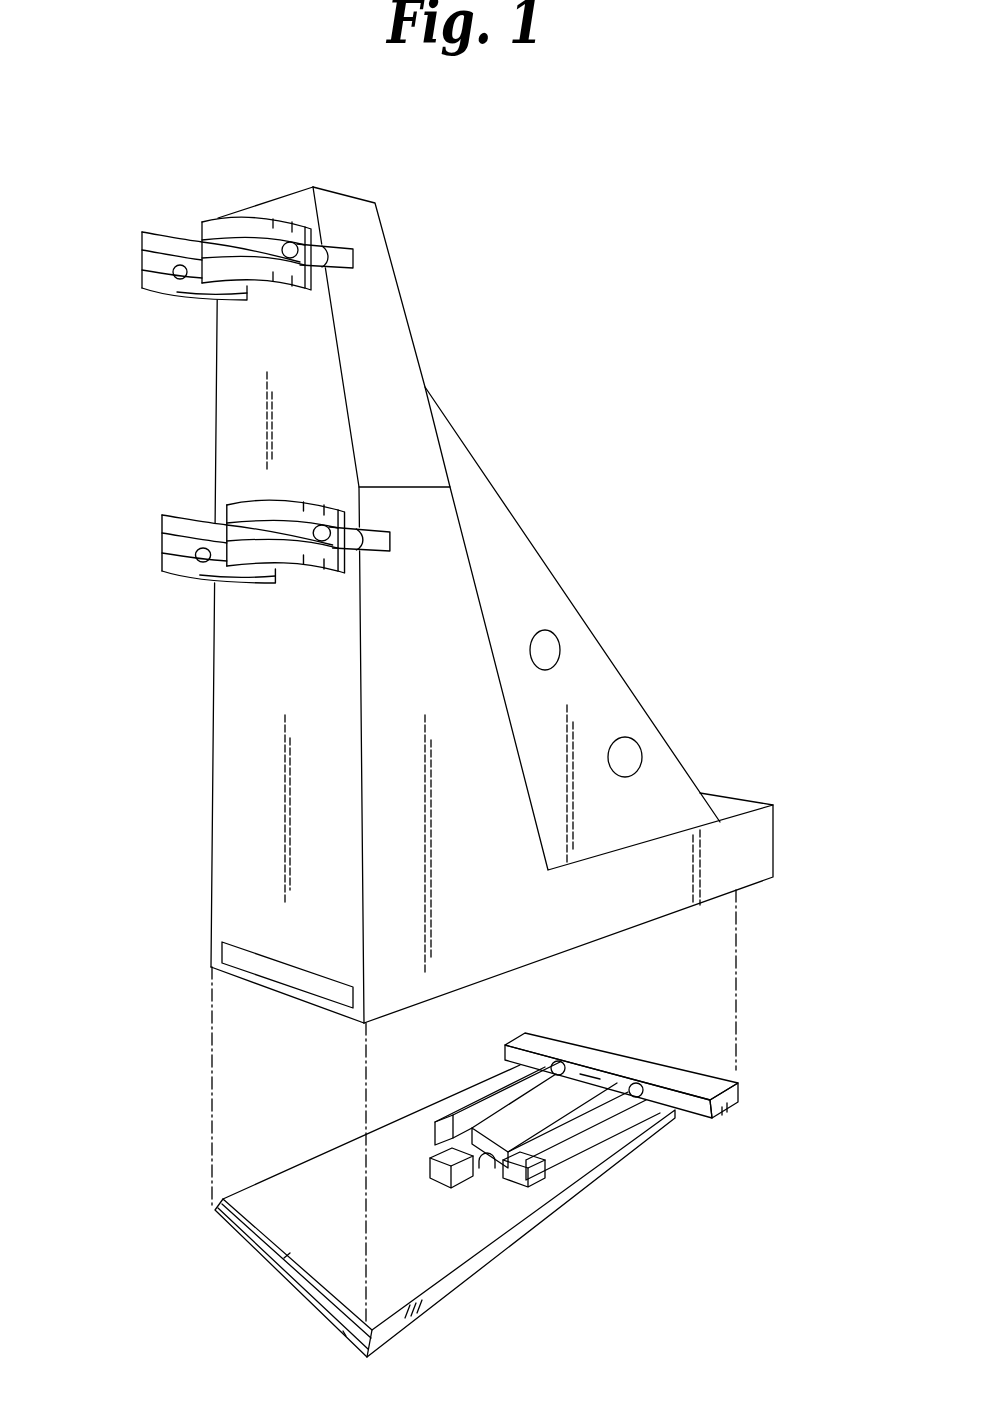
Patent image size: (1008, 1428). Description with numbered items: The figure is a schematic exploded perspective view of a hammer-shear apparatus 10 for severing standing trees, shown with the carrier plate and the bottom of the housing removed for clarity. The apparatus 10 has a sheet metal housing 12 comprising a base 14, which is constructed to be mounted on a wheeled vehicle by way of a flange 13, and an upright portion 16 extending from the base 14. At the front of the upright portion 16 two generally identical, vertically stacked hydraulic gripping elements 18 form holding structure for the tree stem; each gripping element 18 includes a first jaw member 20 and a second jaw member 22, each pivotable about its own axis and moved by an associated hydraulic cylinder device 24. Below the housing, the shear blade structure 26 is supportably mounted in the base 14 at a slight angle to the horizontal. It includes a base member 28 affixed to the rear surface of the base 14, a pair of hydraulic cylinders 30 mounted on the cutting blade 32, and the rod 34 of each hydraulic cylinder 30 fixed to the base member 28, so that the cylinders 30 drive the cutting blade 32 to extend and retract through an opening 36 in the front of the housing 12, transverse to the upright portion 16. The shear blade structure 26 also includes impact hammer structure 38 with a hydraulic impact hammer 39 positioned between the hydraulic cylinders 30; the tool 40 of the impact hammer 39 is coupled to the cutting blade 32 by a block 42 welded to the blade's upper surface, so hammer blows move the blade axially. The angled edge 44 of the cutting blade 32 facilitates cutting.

The hammer-shear apparatus 10 is at (580, 341).
The housing 12 is at (420, 342).
The flange 13 is at (560, 592).
The base 14 is at (770, 848).
The upright portion 16 is at (228, 787).
The hydraulic gripping element 18 is at (143, 279).
The first jaw member 20 is at (166, 246).
The second jaw member 22 is at (232, 229).
The hydraulic cylinder device 24 is at (181, 284).
The shear blade structure 26 is at (480, 1280).
The base member 28 is at (690, 1081).
The hydraulic cylinder 30 is at (474, 1104).
The cutting blade 32 is at (305, 1247).
The rod 34 is at (550, 1057).
The opening 36 is at (263, 968).
The impact hammer structure 38 is at (590, 1066).
The hydraulic impact hammer 39 is at (512, 1112).
The tool 40 is at (486, 1166).
The block 42 is at (430, 1153).
The edge 44 is at (343, 1332).